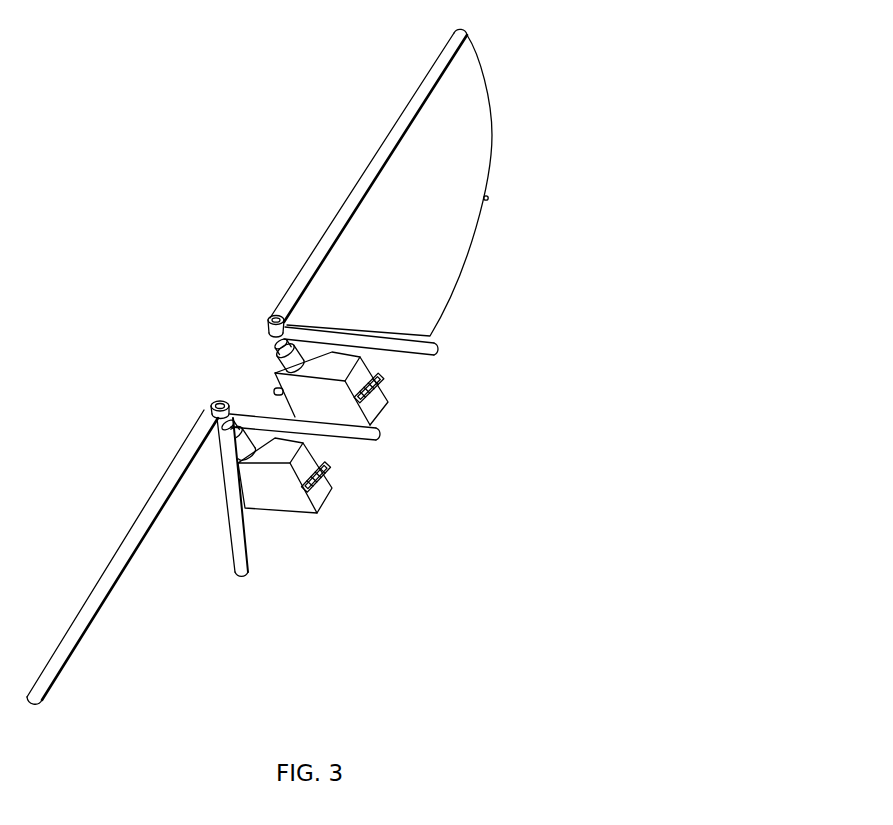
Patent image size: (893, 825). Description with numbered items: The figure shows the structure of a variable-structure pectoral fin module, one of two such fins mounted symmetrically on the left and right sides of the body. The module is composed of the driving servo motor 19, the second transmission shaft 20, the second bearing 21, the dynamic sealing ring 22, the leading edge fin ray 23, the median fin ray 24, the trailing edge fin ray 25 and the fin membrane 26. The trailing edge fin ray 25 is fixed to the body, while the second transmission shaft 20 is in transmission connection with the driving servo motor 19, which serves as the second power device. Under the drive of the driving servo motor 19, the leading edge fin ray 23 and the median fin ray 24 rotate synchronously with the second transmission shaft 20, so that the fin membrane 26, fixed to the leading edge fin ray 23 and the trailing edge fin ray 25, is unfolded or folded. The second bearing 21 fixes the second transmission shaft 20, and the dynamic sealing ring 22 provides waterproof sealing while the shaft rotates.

The driving servo motor 19 is at (283, 487).
The second transmission shaft 20 is at (268, 320).
The second bearing 21 is at (280, 356).
The dynamic sealing ring 22 is at (272, 347).
The leading edge fin ray 23 is at (147, 523).
The median fin ray 24 is at (237, 527).
The trailing edge fin ray 25 is at (385, 433).
The fin membrane 26 is at (413, 315).